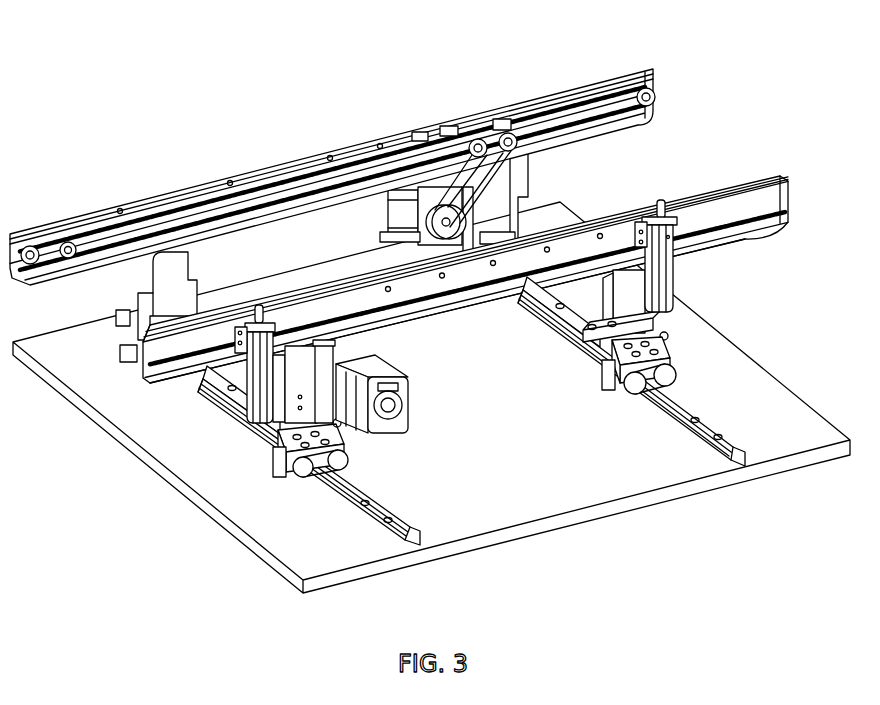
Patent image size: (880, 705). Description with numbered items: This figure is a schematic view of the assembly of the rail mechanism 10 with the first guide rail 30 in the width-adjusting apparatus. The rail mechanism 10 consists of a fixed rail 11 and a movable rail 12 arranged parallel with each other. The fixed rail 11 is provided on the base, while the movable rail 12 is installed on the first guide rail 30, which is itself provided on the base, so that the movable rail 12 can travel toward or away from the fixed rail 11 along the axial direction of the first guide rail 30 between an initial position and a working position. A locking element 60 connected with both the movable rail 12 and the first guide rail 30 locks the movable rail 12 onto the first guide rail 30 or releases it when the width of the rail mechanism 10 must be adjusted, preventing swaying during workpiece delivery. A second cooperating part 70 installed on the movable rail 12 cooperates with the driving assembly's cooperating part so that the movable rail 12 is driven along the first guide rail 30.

The rail mechanism 10 is at (399, 197).
The fixed rail 11 is at (300, 158).
The movable rail 12 is at (430, 283).
The first guide rail 30 is at (380, 510).
The locking element 60 is at (277, 455).
The second cooperating part 70 is at (248, 374).